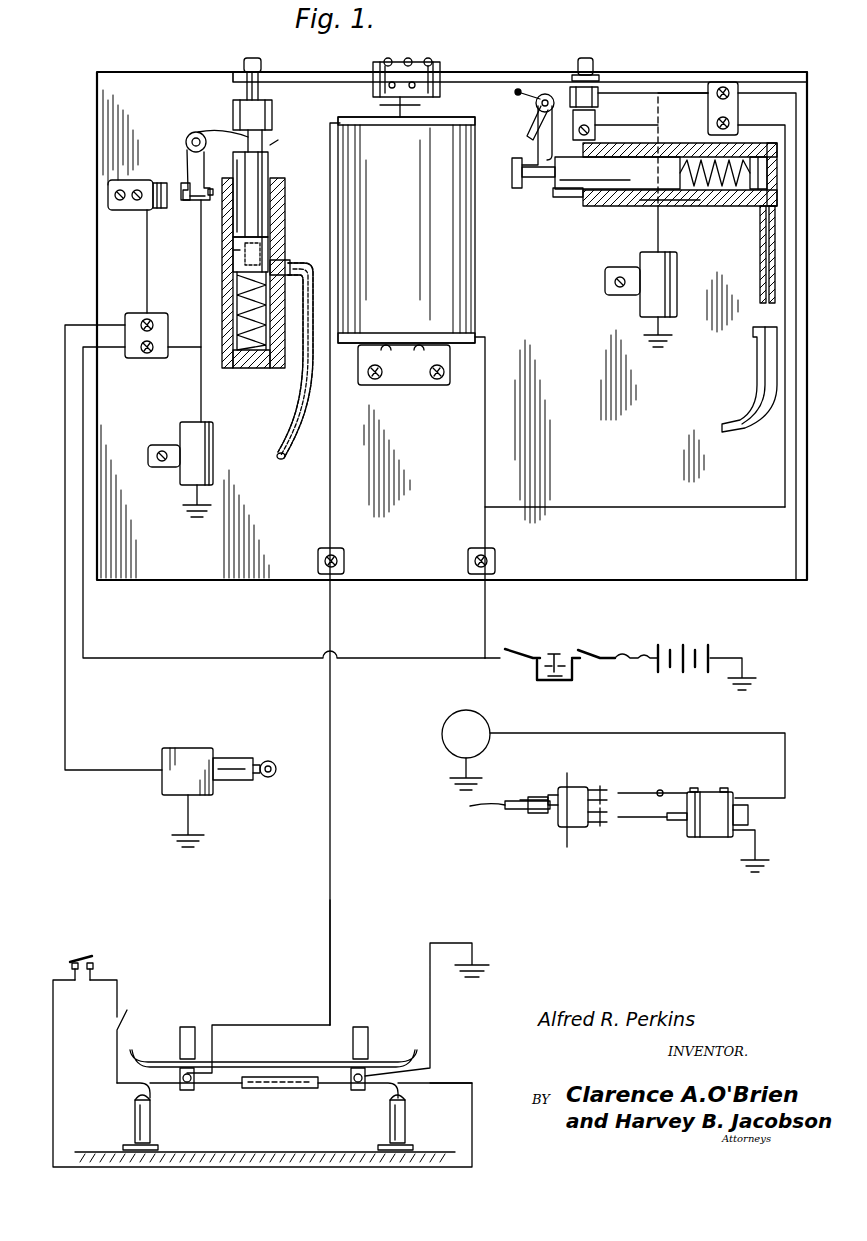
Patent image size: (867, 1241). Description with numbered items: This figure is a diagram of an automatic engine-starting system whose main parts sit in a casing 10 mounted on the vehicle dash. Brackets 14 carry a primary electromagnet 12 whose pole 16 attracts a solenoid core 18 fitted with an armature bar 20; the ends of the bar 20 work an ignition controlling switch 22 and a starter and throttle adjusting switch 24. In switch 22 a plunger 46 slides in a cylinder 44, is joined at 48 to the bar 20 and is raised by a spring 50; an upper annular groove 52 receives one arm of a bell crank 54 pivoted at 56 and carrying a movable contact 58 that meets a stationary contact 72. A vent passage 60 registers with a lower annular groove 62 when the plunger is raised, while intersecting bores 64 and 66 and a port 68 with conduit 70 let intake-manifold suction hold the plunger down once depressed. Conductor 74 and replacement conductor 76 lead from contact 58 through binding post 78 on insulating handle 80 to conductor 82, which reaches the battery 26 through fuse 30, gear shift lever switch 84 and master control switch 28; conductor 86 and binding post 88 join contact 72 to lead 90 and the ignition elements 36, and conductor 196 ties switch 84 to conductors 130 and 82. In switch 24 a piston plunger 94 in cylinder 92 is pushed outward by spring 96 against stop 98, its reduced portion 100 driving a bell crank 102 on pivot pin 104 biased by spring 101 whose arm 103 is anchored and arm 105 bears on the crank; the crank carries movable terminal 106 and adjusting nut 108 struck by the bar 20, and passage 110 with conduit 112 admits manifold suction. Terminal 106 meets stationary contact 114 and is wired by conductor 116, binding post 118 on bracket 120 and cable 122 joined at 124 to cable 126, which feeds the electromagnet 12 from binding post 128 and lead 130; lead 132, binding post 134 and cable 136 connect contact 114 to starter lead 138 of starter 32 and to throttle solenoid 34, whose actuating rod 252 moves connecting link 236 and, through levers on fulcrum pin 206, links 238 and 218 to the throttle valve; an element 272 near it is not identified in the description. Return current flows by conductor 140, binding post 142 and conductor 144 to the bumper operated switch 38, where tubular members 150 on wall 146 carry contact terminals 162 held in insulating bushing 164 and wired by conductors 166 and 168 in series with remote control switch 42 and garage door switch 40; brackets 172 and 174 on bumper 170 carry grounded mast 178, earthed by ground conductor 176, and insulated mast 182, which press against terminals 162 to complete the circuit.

The casing 10 is at (154, 62).
The primary electromagnet 12 is at (468, 292).
The brackets 14 is at (407, 370).
The pole 16 is at (416, 110).
The solenoid core 18 is at (410, 62).
The armature bar 20 is at (486, 70).
The ignition controlling switch 22 is at (288, 132).
The starter and throttle valve adjusting switch 24 is at (606, 220).
The vehicle battery 26 is at (686, 642).
The master control switch 28 is at (594, 643).
The safety fuse 30 is at (626, 656).
The engine electric starter 32 is at (443, 738).
The throttle valve adjusting solenoid 34 is at (709, 848).
The engine ignition system elements 36 is at (200, 742).
The car bumper operated switch 38 is at (249, 1044).
The garage door operated switch 40 is at (120, 1022).
The remote control switch 42 is at (93, 958).
The cylinder 44 is at (278, 222).
The plunger 46 is at (263, 192).
The detachable connection 48 is at (250, 58).
The spring means 50 is at (250, 370).
The annular groove 52 is at (238, 130).
The bell crank 54 is at (204, 132).
The pivot 56 is at (186, 142).
The movable electrical contact 58 is at (186, 200).
The vent passage 60 is at (232, 250).
The annular groove 62 is at (266, 252).
The bore 64 is at (245, 194).
The bore 66 is at (204, 294).
The port 68 is at (290, 268).
The conduit 70 is at (300, 375).
The stationary contact 72 is at (155, 183).
The electrical conductor 74 is at (200, 340).
The replacement conductor 76 is at (180, 434).
The binding post 78 is at (142, 354).
The insulating handle 80 is at (130, 318).
The conductor 82 is at (82, 445).
The gear shift lever operated switch 84 is at (512, 650).
The conductor 86 is at (146, 238).
The binding post 88 is at (148, 318).
The lead 90 is at (64, 362).
The cylinder 92 is at (708, 208).
The piston plunger 94 is at (617, 173).
The spring 96 is at (702, 156).
The stop 98 is at (562, 198).
The annular groove 100 is at (530, 188).
The spring 101 is at (545, 94).
The bell crank 102 is at (536, 156).
The spring arm 103 is at (514, 92).
The pivot pin 104 is at (546, 72).
The spring arm 105 is at (530, 128).
The movable electric terminal 106 is at (600, 90).
The adjusting nut 108 is at (580, 60).
The passage 110 is at (763, 200).
The conduit 112 is at (756, 392).
The stationary electrical contact 114 is at (596, 120).
The electrical conductor 116 is at (690, 80).
The binding post 118 is at (723, 86).
The insulating bracket 120 is at (738, 92).
The cable 122 is at (784, 420).
The connection 124 is at (488, 505).
The cable 126 is at (484, 470).
The binding post 128 is at (474, 556).
The electrical lead 130 is at (484, 626).
The lead 132 is at (656, 100).
The binding post 134 is at (738, 118).
The electric cable 136 is at (792, 538).
The starter lead 138 is at (648, 732).
The conductor 140 is at (330, 492).
The binding post 142 is at (344, 560).
The conductor 144 is at (332, 922).
The wall 146 is at (206, 1152).
The tubular members 150 is at (406, 1128).
The contact terminals 162 is at (138, 1088).
The insulating bushing 164 is at (282, 1088).
The conductor 166 is at (445, 1082).
The conductor 168 is at (115, 1056).
The bumper 170 is at (286, 1060).
The bracket 172 is at (358, 1090).
The bracket 174 is at (180, 1072).
The ground conductor 176 is at (428, 1016).
The metallic mast 178 is at (367, 1072).
The mast 182 is at (188, 1090).
The conductor 196 is at (503, 662).
The fulcrum pin 206 is at (560, 832).
The link 218 is at (508, 810).
The connecting link 236 is at (626, 822).
The link 238 is at (620, 790).
The actuating rod 252 is at (676, 822).
The ground connection 272 is at (758, 838).